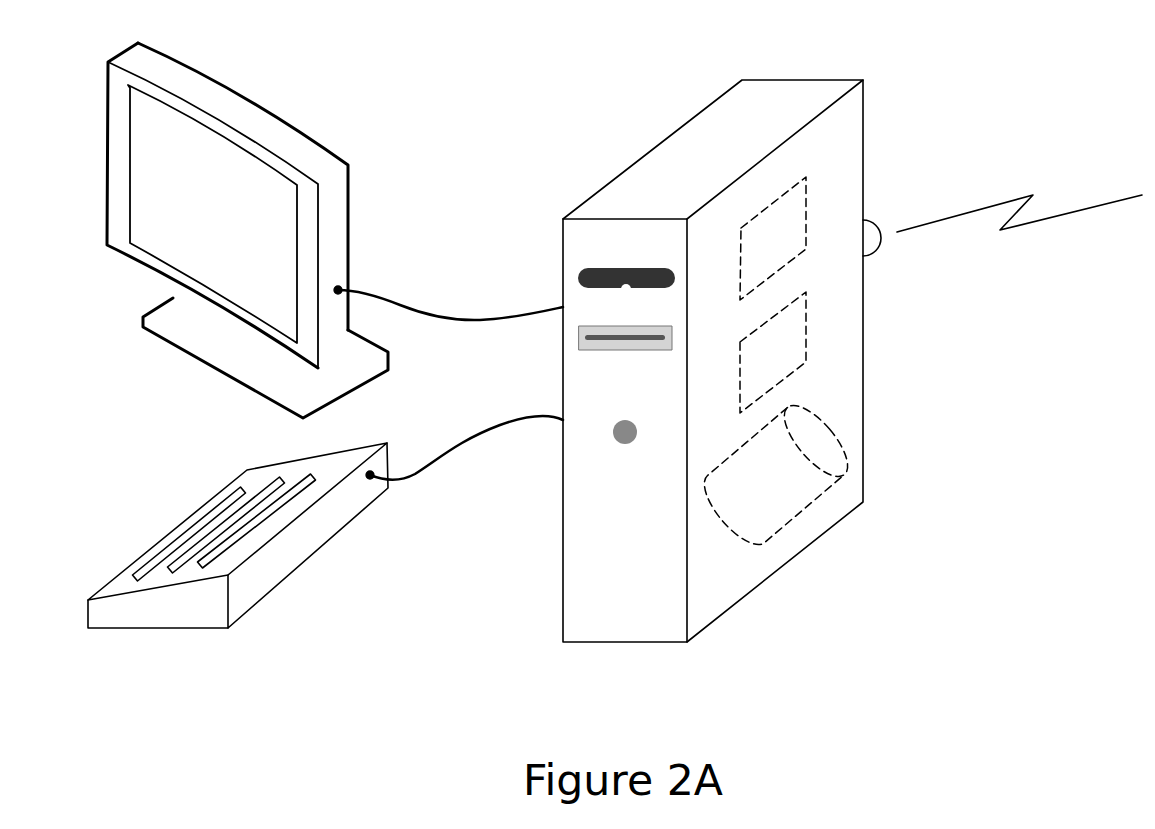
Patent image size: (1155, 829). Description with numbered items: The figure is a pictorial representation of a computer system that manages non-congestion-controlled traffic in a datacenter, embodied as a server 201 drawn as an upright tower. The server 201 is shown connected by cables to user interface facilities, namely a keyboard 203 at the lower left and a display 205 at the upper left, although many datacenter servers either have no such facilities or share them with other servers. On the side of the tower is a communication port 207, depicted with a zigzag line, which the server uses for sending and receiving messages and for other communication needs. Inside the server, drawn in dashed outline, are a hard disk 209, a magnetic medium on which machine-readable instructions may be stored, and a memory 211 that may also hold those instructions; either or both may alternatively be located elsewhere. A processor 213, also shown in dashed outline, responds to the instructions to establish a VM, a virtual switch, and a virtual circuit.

The server 201 is at (767, 80).
The keyboard 203 is at (343, 528).
The display 205 is at (348, 203).
The communication port 207 is at (880, 253).
The hard disk 209 is at (800, 513).
The memory 211 is at (806, 335).
The processor 213 is at (807, 197).